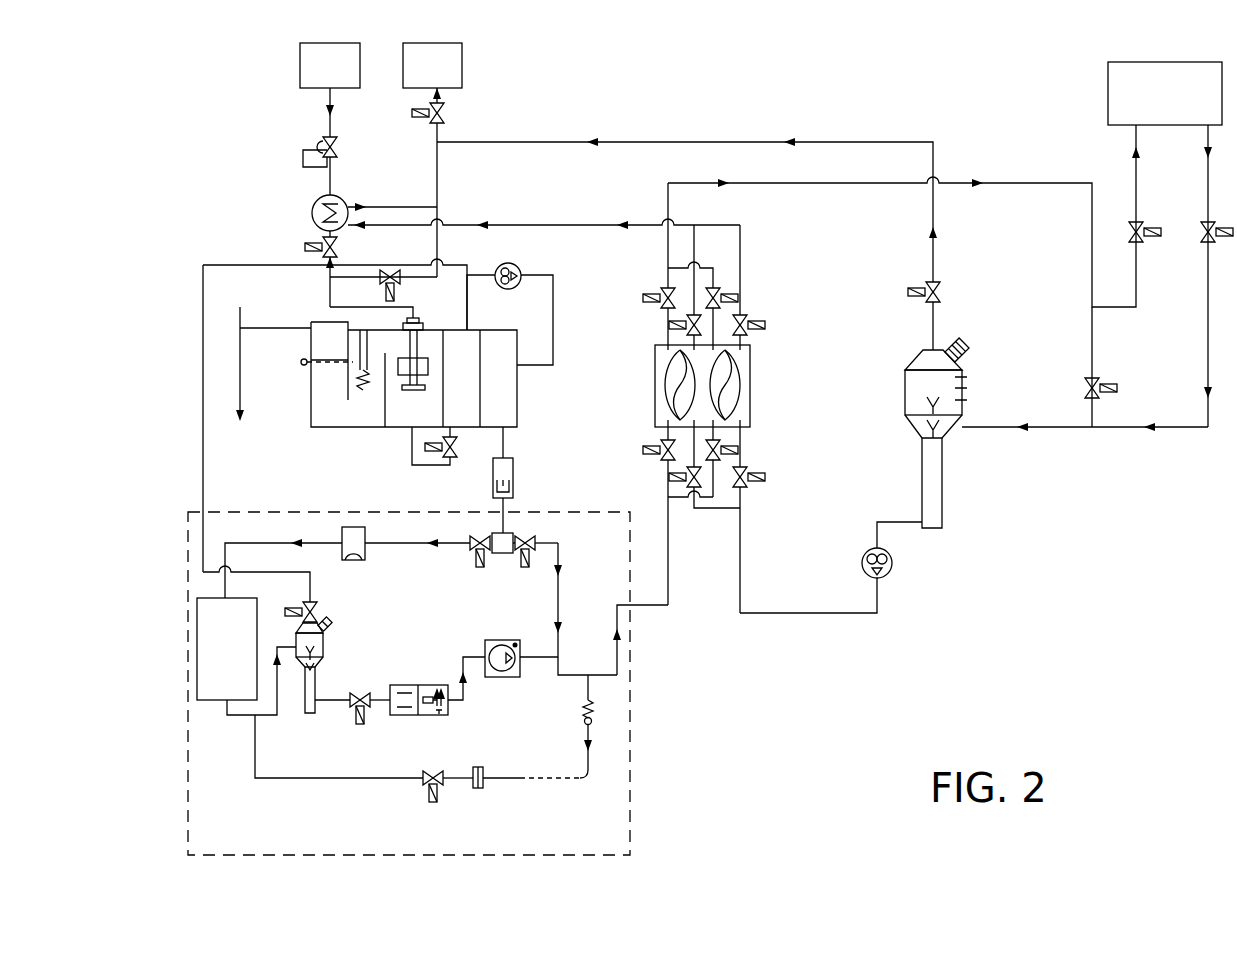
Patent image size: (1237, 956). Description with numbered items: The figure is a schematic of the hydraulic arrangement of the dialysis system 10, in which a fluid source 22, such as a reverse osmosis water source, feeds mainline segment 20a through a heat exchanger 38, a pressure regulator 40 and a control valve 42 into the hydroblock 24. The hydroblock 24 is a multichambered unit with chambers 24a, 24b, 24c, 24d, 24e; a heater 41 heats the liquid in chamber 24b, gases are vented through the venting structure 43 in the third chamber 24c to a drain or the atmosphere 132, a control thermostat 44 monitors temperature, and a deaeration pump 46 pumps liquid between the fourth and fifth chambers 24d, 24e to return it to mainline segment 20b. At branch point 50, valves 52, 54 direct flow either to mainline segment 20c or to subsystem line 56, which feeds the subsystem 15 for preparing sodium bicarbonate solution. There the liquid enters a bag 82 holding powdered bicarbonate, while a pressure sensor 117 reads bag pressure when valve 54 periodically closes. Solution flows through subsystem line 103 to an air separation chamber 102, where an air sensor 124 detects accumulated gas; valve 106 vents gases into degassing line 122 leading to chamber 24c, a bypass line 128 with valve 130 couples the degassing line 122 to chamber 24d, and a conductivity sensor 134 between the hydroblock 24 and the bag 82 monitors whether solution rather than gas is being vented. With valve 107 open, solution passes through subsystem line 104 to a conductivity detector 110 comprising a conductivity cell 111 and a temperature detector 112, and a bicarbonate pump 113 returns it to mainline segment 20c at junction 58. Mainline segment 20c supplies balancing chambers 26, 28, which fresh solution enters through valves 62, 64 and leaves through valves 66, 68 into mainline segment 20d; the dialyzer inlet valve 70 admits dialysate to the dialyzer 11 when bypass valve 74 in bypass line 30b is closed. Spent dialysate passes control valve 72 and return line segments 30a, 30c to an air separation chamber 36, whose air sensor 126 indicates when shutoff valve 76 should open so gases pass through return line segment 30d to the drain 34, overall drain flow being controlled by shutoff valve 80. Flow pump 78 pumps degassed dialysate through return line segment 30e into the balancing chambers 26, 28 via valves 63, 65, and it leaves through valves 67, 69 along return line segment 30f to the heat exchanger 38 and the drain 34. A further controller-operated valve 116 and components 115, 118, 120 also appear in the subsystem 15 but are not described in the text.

The dialysis system 10 is at (988, 618).
The dialyzer 11 is at (1165, 93).
The subsystem 15 is at (643, 757).
The mainline segment 20a is at (327, 118).
The mainline segment 20b is at (505, 445).
The mainline segment 20c is at (558, 580).
The mainline segment 20d is at (780, 183).
The fluid source 22 is at (330, 65).
The hydroblock 24 is at (293, 421).
The chamber 24a is at (322, 378).
The chamber 24b is at (360, 413).
The third chamber 24c is at (393, 420).
The fourth chamber 24d is at (470, 340).
The fifth chamber 24e is at (512, 409).
The balancing chamber 26 is at (655, 385).
The balancing chamber 28 is at (752, 405).
The return line segment 30a is at (1206, 360).
The bypass line 30b is at (1100, 410).
The return line segment 30c is at (982, 428).
The return line segment 30d is at (650, 141).
The return line segment 30e is at (896, 522).
The return line segment 30f is at (527, 224).
The drain 34 is at (432, 65).
The air separation chamber 36 is at (905, 390).
The heat exchanger 38 is at (316, 205).
The pressure regulator 40 is at (340, 147).
The heater 41 is at (367, 330).
The control valve 42 is at (312, 247).
The venting structure 43 is at (422, 320).
The control thermostat 44 is at (301, 361).
The deaeration pump 46 is at (520, 264).
The branch point 50 is at (497, 556).
The valve 52 is at (523, 570).
The valve 54 is at (477, 567).
The subsystem line 56 is at (365, 545).
The junction 58 is at (558, 652).
The valve 62 is at (640, 452).
The valve 63 is at (676, 485).
The valve 64 is at (742, 447).
The valve 65 is at (767, 475).
The valve 66 is at (664, 292).
The valve 67 is at (670, 331).
The valve 68 is at (720, 292).
The valve 69 is at (745, 318).
The dialyzer inlet valve 70 is at (1140, 224).
The control valve 72 is at (1204, 244).
The bypass valve 74 is at (1102, 385).
The shutoff valve 76 is at (945, 292).
The flow pump 78 is at (875, 549).
The shutoff valve 80 is at (447, 113).
The bag 82 is at (227, 649).
The air separation chamber 102 is at (352, 691).
The subsystem line 103 is at (243, 716).
The subsystem line 104 is at (322, 705).
The valve 106 is at (307, 605).
The valve 107 is at (363, 725).
The conductivity detector 110 is at (466, 716).
The conductivity cell 111 is at (405, 716).
The temperature detector 112 is at (440, 685).
The bicarbonate pump 113 is at (485, 640).
The check valve 115 is at (557, 780).
The valve 116 is at (433, 805).
The pressure sensor 117 is at (340, 542).
The line 118 is at (392, 779).
The sensor 120 is at (483, 786).
The degassing line 122 is at (255, 265).
The air sensor 124 is at (333, 628).
The air sensor 126 is at (970, 353).
The bypass line 128 is at (433, 466).
The valve 130 is at (457, 447).
The drain or atmosphere 132 is at (265, 376).
The conductivity sensor 134 is at (515, 470).